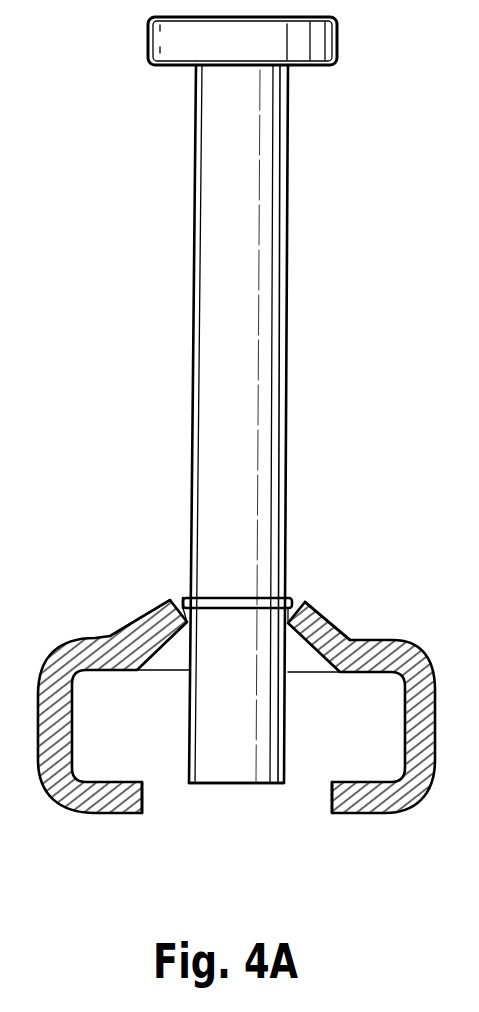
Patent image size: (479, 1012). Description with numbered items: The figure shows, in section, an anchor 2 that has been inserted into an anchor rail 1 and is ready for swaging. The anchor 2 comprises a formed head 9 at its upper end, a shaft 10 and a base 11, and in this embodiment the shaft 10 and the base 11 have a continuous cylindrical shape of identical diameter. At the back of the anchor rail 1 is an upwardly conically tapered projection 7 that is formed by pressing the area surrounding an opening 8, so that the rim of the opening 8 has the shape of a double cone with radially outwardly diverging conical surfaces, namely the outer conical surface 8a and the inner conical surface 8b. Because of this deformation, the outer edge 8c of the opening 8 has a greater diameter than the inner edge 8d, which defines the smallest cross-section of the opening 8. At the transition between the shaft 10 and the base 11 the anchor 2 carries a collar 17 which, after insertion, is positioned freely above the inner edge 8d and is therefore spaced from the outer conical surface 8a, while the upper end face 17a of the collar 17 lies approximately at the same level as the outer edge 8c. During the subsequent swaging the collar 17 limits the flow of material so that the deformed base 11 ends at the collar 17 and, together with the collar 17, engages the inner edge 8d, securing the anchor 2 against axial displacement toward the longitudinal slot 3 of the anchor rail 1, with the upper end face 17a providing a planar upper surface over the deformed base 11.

The anchor rail 1 is at (86, 610).
The anchor 2 is at (165, 282).
The longitudinal slot 3 is at (300, 801).
The projection 7 is at (367, 651).
The opening 8 is at (208, 636).
The outer conical surface 8a is at (300, 604).
The inner conical surface 8b is at (163, 647).
The outer edge 8c is at (167, 599).
The inner edge 8d is at (283, 620).
The formed head 9 is at (177, 33).
The shaft 10 is at (248, 367).
The base 11 is at (208, 768).
The collar 17 is at (257, 600).
The upper end face of the collar 17a is at (210, 597).